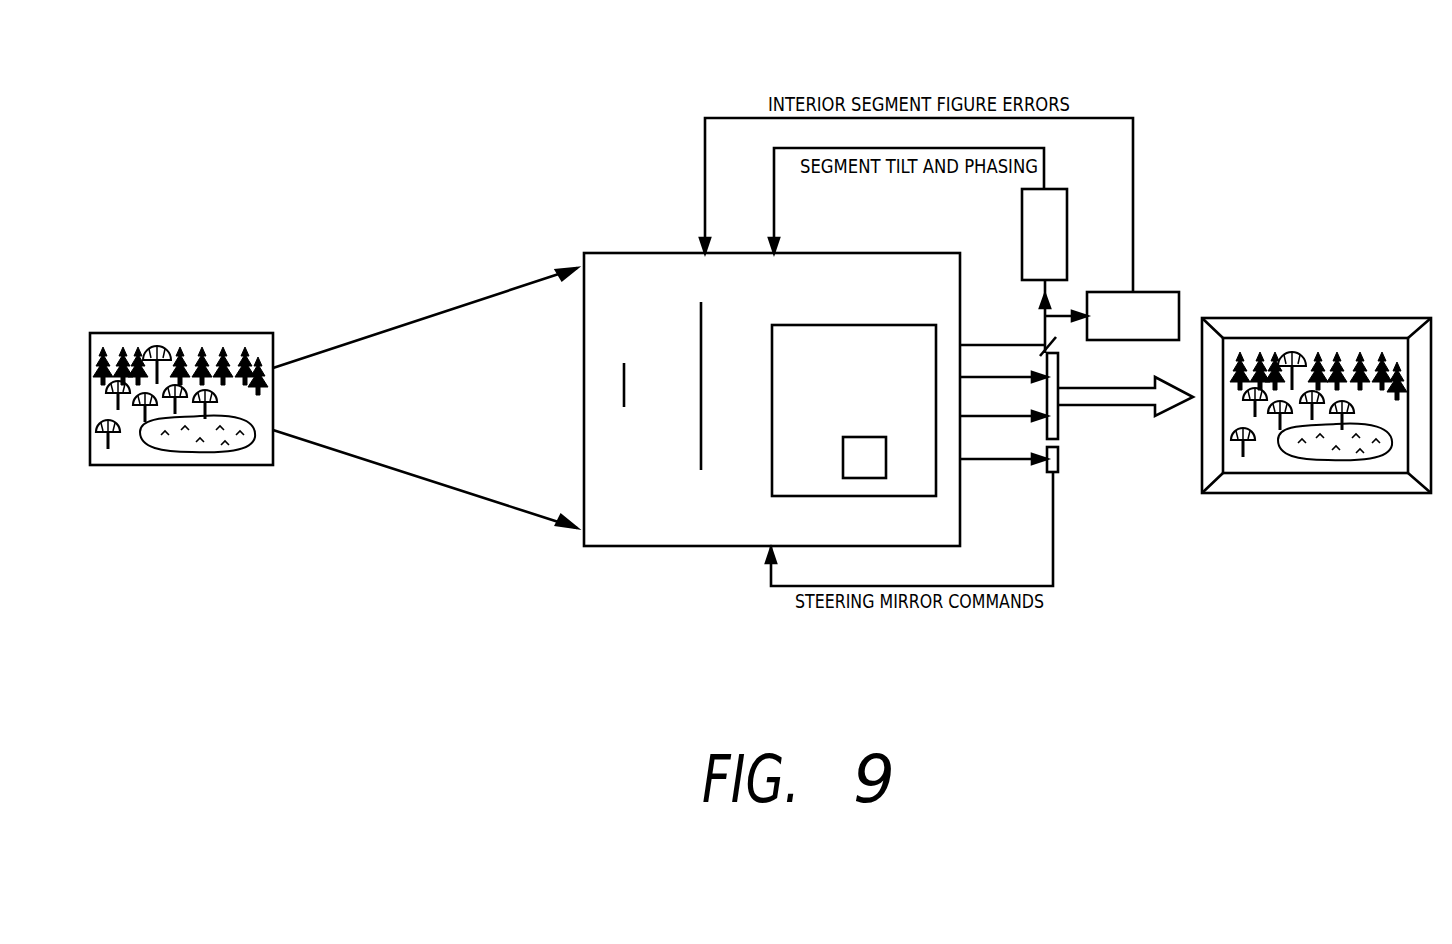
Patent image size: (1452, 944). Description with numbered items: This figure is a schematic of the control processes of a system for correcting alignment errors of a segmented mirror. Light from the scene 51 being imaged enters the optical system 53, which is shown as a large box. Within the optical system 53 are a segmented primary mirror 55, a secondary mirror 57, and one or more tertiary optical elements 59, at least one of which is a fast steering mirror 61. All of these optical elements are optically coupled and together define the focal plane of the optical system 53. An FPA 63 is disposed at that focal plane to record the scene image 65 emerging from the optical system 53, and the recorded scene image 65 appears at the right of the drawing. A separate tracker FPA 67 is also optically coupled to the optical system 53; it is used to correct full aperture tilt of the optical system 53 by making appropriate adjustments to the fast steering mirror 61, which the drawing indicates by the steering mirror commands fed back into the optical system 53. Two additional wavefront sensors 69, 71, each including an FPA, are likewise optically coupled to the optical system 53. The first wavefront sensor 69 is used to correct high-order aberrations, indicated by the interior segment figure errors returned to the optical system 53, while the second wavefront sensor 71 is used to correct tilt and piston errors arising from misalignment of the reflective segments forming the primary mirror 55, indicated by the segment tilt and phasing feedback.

The scene 51 is at (180, 465).
The optical system 53 is at (600, 548).
The segmented primary mirror 55 is at (703, 453).
The secondary mirror 57 is at (622, 380).
The tertiary optical elements 59 is at (826, 325).
The fast steering mirror 61 is at (871, 437).
The FPA 63 is at (1060, 417).
The scene image 65 is at (1292, 493).
The tracker FPA 67 is at (1045, 461).
The first wavefront sensor 69 is at (1067, 250).
The second wavefront sensor 71 is at (1160, 292).